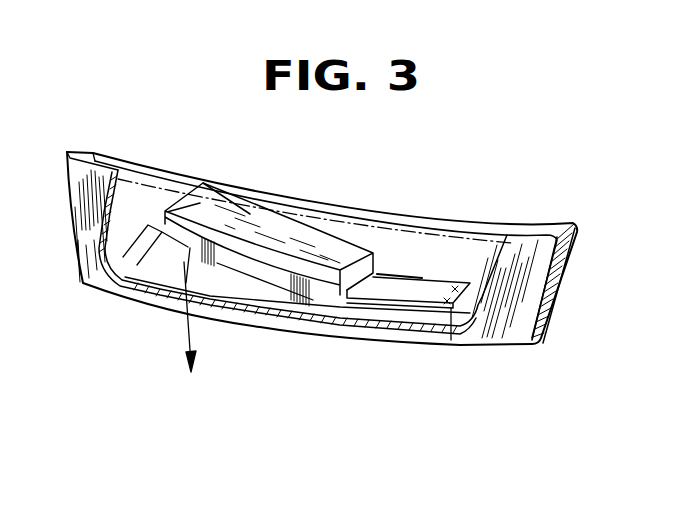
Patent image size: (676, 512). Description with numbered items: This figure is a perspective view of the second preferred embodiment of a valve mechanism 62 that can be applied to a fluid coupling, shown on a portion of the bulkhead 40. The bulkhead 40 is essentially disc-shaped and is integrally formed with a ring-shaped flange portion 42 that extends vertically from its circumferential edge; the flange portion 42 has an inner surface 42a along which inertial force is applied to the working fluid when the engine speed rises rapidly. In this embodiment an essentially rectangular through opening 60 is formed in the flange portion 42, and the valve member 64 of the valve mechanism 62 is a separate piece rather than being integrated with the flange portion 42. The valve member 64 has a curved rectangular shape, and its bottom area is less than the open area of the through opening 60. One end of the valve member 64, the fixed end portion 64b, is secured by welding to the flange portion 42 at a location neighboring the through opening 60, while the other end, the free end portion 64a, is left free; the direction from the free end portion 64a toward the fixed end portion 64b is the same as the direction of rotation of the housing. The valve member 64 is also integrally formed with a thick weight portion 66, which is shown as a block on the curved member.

The bulkhead 40 is at (516, 345).
The flange portion 42 is at (560, 297).
The inner surface of the flange portion 42a is at (480, 280).
The through opening 60 is at (157, 263).
The valve mechanism 62 is at (263, 328).
The valve member 64 is at (383, 300).
The free end portion 64a is at (186, 190).
The fixed end portion 64b is at (451, 340).
The weight portion 66 is at (250, 214).